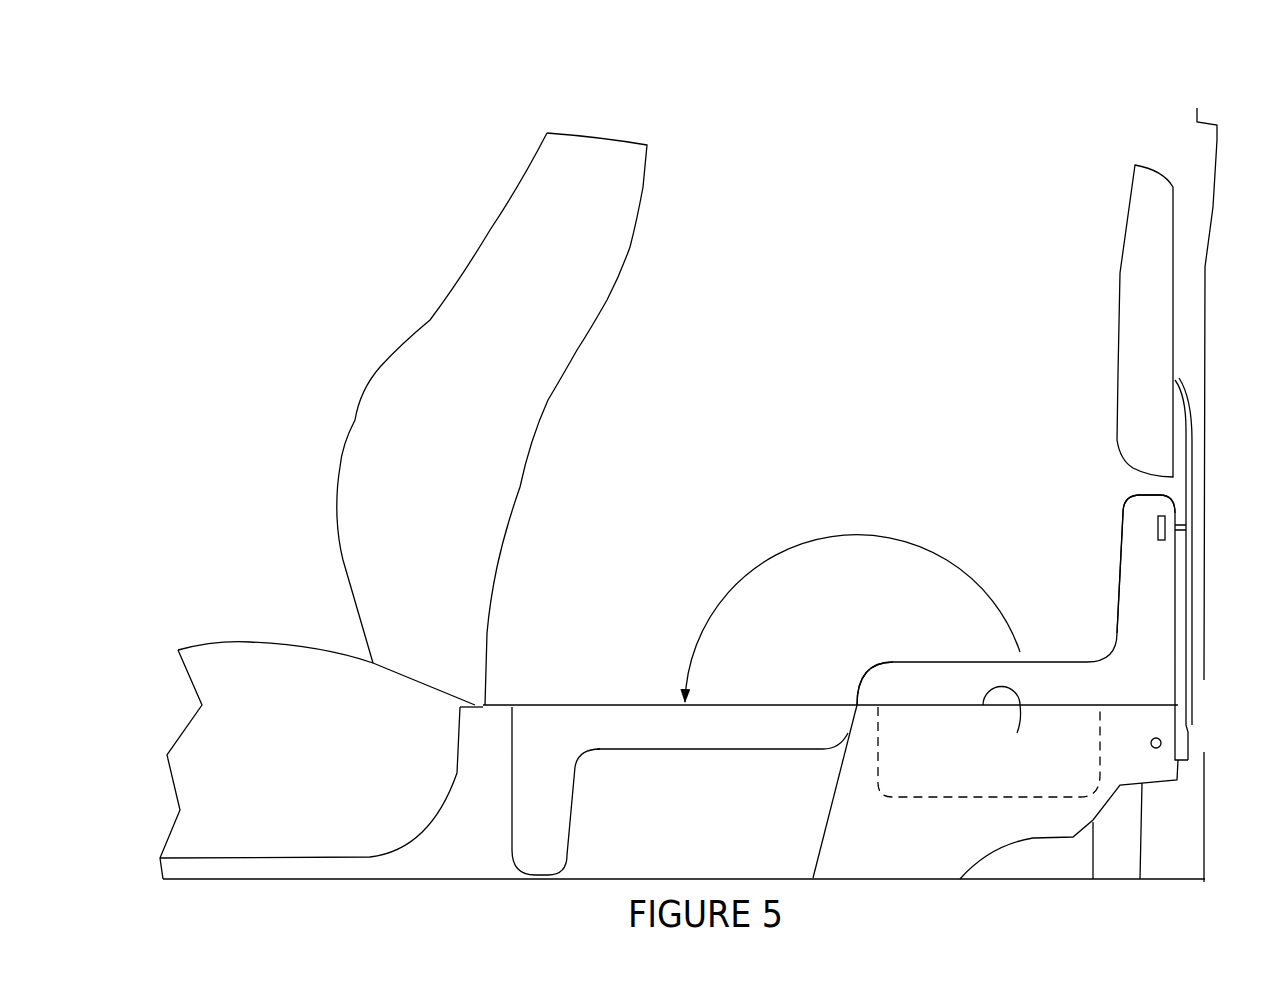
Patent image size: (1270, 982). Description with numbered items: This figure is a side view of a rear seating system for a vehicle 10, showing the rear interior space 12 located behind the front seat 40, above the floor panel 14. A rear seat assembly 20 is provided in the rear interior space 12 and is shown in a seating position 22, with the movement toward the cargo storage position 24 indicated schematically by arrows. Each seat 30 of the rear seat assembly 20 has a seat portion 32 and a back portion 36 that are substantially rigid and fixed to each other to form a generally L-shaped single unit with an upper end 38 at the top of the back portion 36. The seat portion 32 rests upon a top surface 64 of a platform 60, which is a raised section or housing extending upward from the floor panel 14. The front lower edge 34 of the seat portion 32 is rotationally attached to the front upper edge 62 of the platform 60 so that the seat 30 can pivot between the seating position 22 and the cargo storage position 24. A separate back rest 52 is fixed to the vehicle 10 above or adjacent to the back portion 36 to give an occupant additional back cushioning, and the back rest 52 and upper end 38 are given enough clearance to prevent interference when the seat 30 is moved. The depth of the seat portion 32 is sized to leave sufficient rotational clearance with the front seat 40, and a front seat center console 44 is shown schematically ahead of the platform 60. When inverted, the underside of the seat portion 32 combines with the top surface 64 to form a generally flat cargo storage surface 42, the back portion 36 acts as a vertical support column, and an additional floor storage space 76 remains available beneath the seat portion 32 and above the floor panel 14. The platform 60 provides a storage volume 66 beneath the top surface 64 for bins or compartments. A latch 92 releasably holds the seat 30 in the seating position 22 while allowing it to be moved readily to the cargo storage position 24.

The vehicle 10 is at (1164, 89).
The rear interior space 12 is at (987, 220).
The floor panel 14 is at (710, 876).
The rear seat assembly 20 is at (840, 298).
The seating position 22 is at (975, 520).
The cargo storage position 24 is at (670, 568).
The seat 30 is at (898, 335).
The seat portion 32 is at (1050, 660).
The front lower edge 34 is at (857, 705).
The back portion 36 is at (1122, 547).
The upper end 38 is at (1140, 493).
The front seat 40 is at (547, 360).
The cargo storage surface 42 is at (548, 705).
The front seat center console 44 is at (455, 842).
The back rest 52 is at (1133, 262).
The platform 60 is at (843, 818).
The front upper edge 62 is at (860, 705).
The top surface 64 is at (1008, 725).
The storage volume 66 is at (917, 800).
The floor storage space 76 is at (605, 840).
The latch 92 is at (1157, 542).